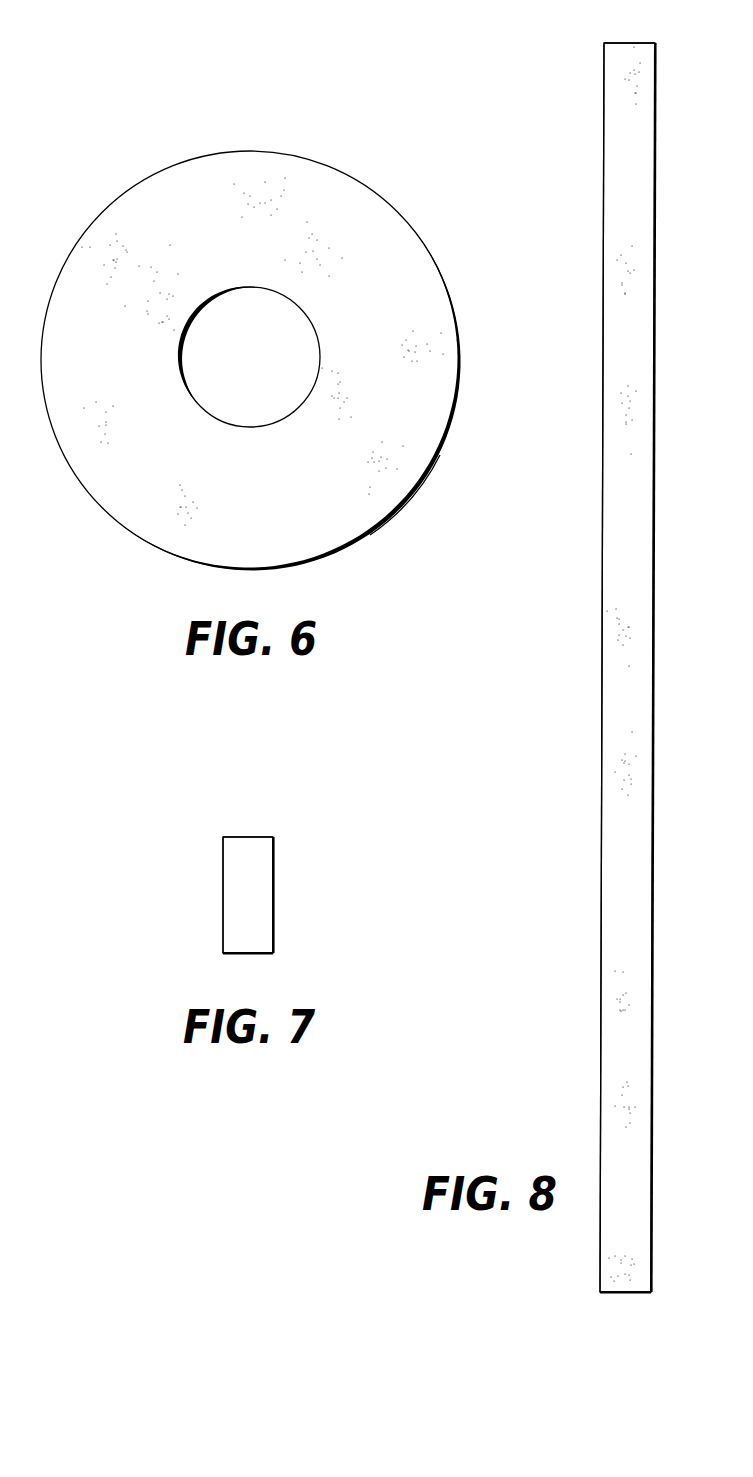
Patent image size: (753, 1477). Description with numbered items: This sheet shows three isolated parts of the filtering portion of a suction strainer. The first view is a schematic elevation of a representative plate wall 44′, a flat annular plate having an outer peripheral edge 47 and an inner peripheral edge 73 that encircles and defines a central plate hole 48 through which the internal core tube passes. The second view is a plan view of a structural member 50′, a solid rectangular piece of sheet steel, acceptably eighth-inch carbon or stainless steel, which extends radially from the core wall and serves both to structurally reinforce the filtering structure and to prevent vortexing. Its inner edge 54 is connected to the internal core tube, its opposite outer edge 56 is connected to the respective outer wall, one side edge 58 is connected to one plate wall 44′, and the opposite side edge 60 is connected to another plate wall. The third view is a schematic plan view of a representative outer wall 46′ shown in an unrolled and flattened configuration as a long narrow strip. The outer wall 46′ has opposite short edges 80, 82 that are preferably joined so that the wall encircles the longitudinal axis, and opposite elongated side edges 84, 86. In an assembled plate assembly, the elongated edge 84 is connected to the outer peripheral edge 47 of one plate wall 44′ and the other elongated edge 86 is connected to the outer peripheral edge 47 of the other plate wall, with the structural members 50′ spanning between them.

In FIG. 6, the plate wall 44′ is at (402, 168).
In FIG. 6, the central plate hole 48 is at (285, 330).
In FIG. 6, the inner peripheral edge 73 is at (180, 357).
In FIG. 6, the outer peripheral edge 47 is at (410, 490).
In FIG. 7, the structural member 50′ is at (180, 848).
In FIG. 7, the outer edge 56 is at (245, 837).
In FIG. 7, the side edge 58 is at (223, 896).
In FIG. 7, the opposite side edge 60 is at (273, 896).
In FIG. 7, the inner edge 54 is at (244, 953).
In FIG. 8, the outer wall 46′ is at (682, 503).
In FIG. 8, the short edge 80 is at (632, 43).
In FIG. 8, the short edge 82 is at (622, 1292).
In FIG. 8, the elongated side edge 84 is at (655, 832).
In FIG. 8, the elongated side edge 86 is at (602, 789).